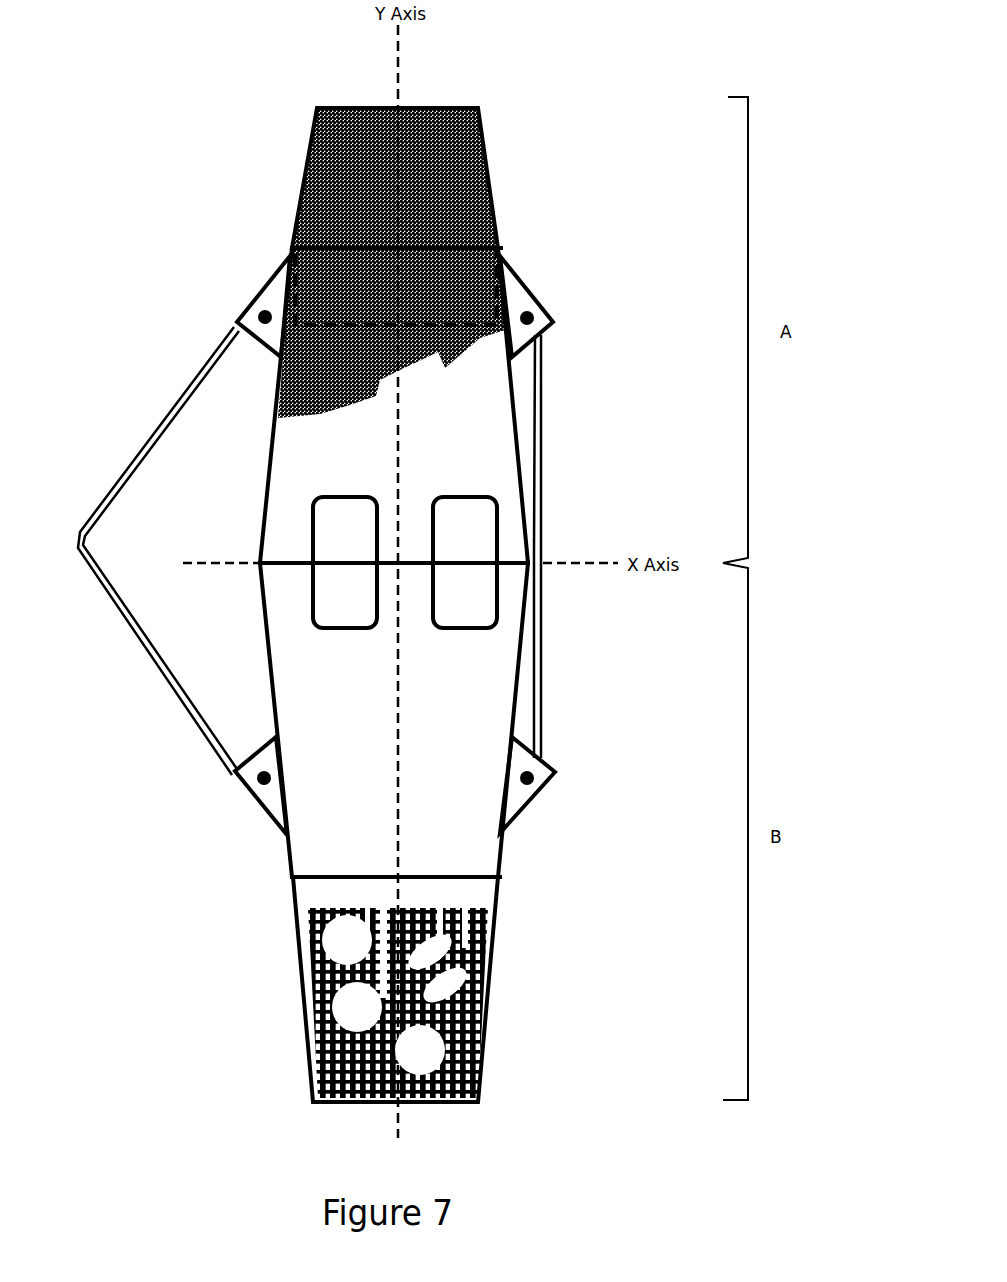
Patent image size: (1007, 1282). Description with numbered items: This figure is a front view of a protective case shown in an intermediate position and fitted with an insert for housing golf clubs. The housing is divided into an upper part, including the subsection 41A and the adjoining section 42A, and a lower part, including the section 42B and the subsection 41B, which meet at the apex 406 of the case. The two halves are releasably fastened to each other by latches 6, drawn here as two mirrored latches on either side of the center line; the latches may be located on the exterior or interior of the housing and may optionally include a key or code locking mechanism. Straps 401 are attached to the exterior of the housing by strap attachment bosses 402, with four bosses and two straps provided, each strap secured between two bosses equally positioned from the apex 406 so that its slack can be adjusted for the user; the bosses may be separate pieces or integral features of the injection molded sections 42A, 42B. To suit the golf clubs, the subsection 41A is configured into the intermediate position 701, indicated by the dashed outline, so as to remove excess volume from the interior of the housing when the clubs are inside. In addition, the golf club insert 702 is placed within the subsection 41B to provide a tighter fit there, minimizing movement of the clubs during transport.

The subsection 41A is at (310, 175).
The intermediate position 701 is at (410, 323).
The strap attachment boss 402 is at (265, 290).
The strap 401 is at (140, 462).
The section 42A is at (268, 463).
The section 42B is at (267, 655).
The apex 406 is at (260, 562).
The latch 6 is at (353, 630).
The subsection 41B is at (296, 903).
The golf club insert 702 is at (330, 1022).